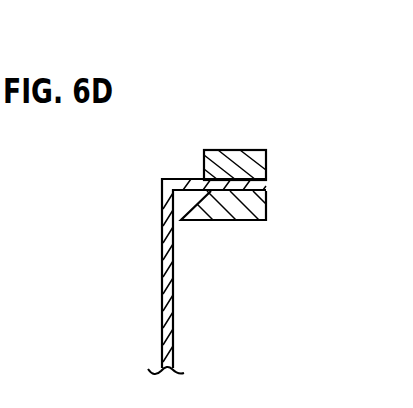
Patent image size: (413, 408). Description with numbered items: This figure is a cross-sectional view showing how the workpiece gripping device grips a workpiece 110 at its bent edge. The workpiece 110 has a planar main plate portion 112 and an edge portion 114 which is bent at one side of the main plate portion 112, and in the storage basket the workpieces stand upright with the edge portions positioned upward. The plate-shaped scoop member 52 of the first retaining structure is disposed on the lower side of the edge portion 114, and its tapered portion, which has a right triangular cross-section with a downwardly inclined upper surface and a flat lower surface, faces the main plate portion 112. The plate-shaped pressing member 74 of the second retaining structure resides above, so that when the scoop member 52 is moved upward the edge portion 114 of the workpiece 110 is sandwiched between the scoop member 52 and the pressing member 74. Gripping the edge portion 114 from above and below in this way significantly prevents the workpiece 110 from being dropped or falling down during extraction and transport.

The workpiece 110 is at (188, 261).
The main plate portion 112 is at (168, 267).
The edge portion 114 is at (190, 189).
The pressing member 74 is at (267, 162).
The scoop member 52 is at (242, 212).